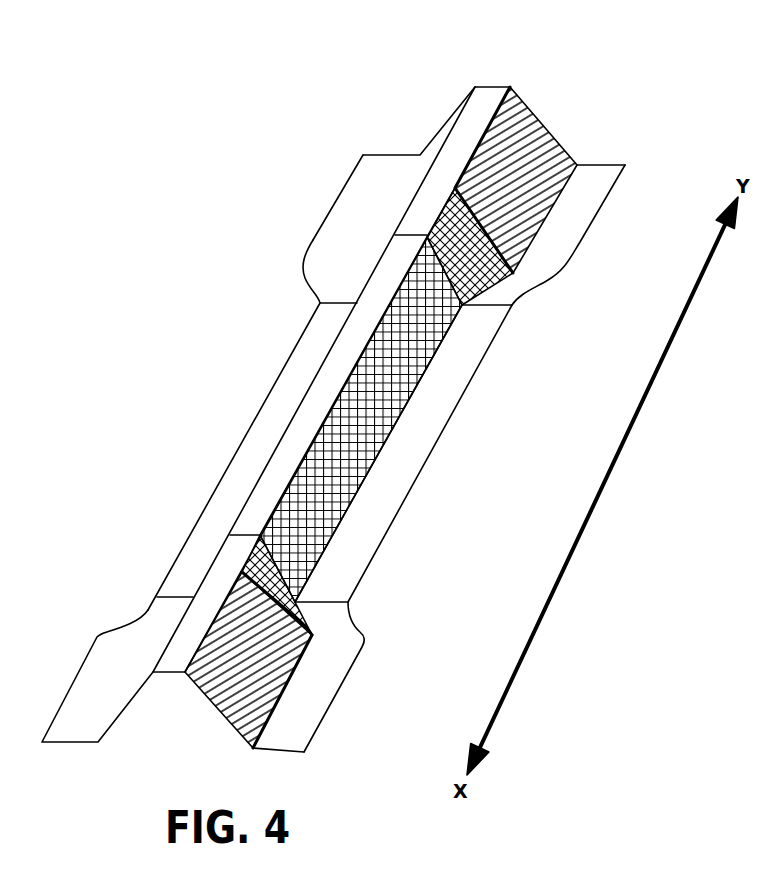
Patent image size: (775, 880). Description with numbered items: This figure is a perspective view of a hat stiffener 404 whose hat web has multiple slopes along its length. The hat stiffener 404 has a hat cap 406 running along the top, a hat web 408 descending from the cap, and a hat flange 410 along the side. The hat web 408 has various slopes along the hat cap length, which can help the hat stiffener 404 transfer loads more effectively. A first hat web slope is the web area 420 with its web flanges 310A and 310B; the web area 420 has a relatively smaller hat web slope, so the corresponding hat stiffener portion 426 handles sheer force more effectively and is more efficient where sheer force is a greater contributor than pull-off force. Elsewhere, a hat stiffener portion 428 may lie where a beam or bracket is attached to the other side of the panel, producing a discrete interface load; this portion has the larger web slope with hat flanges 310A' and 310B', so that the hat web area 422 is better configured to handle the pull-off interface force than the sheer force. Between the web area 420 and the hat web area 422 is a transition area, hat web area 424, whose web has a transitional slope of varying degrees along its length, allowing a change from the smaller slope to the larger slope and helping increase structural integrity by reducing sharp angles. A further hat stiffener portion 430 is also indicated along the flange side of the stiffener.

The hat stiffener 404 is at (151, 319).
The hat cap 406 is at (490, 100).
The hat web 408 is at (565, 190).
The hat flange 410 is at (383, 489).
The web area 420 is at (546, 212).
The hat web area 422 is at (430, 322).
The hat web area 424 is at (487, 265).
The hat stiffener portion 426 is at (378, 166).
The hat stiffener portion 428 is at (270, 392).
The third flange section 430 is at (131, 641).
The web flange 310A is at (320, 253).
The hat flange 310A' is at (208, 530).
The web flange 310B is at (588, 235).
The hat flange 310B' is at (348, 648).